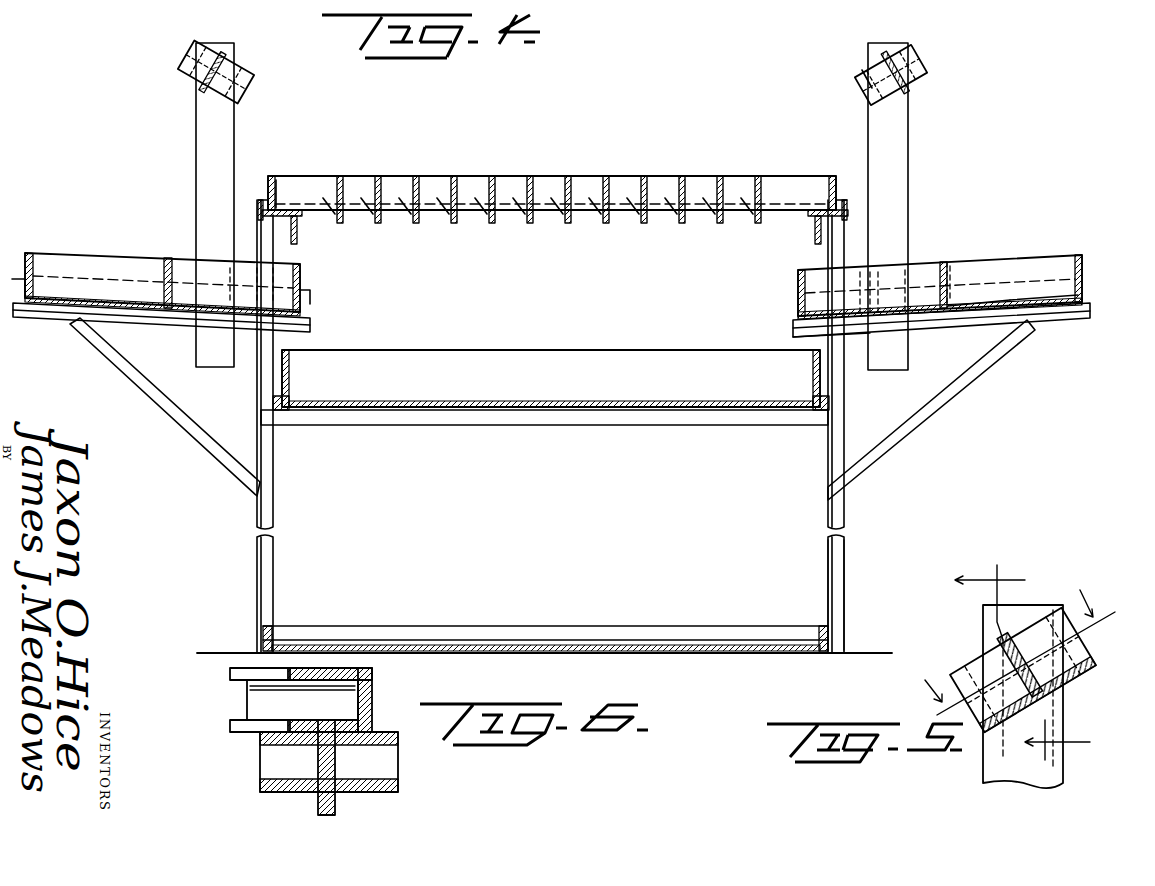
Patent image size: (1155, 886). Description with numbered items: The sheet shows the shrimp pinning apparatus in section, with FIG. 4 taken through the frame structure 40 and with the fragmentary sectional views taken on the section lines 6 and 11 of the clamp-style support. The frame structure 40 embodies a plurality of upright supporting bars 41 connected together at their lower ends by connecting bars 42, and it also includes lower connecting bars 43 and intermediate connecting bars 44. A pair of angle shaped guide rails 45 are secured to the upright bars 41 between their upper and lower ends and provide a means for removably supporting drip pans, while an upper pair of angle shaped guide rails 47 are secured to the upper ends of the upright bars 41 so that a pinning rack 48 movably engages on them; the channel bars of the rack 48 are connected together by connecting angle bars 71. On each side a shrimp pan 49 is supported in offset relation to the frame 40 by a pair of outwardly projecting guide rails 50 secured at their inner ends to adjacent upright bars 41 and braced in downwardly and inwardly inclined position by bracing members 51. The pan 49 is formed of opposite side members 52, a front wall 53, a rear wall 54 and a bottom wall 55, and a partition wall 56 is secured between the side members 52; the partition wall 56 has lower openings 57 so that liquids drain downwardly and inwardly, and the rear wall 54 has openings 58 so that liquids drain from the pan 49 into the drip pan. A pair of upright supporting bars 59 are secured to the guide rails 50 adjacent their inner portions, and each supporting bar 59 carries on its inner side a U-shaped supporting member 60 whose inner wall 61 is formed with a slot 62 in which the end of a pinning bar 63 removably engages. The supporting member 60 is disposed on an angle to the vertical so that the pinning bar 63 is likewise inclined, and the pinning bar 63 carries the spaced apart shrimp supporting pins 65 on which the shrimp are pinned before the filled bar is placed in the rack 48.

In FIG. 4, the frame structure 40 is at (860, 504).
In FIG. 4, the upright supporting bars 41 is at (842, 565).
In FIG. 4, the connecting bars 42 is at (278, 640).
In FIG. 4, the lower connecting bars 43 is at (668, 632).
In FIG. 4, the intermediate connecting bars 44 is at (516, 412).
In FIG. 4, the angle shaped guide rails 45 is at (295, 412).
In FIG. 4, the upper guide rails 47 is at (300, 240).
In FIG. 4, the pinning rack 48 is at (788, 177).
In FIG. 4, the shrimp pan 49 is at (99, 248).
In FIG. 4, the outwardly projecting guide rails 50 is at (60, 322).
In FIG. 4, the bracing members 51 is at (228, 468).
In FIG. 4, the side members 52 is at (922, 285).
In FIG. 4, the front wall 53 is at (1080, 272).
In FIG. 4, the rear wall 54 is at (800, 282).
In FIG. 4, the bottom wall 55 is at (1000, 308).
In FIG. 4, the partition wall 56 is at (950, 268).
In FIG. 4, the lower openings 57 is at (962, 318).
In FIG. 4, the openings 58 is at (800, 316).
In FIG. 4, the upright supporting bars 59 is at (196, 172).
In FIG. 5, the upright supporting bars 59 is at (1025, 770).
In FIG. 4, the U-shaped supporting member 60 is at (186, 95).
In FIG. 6, the U-shaped supporting member 60 is at (372, 702).
In FIG. 5, the U-shaped supporting member 60 is at (964, 653).
In FIG. 6, the inner wall 61 is at (300, 688).
In FIG. 4, the slot 62 is at (858, 78).
In FIG. 6, the slot 62 is at (345, 775).
In FIG. 4, the pinning bar 63 is at (579, 192).
In FIG. 5, the pinning bar 63 is at (1013, 693).
In FIG. 4, the shrimp supporting pins 65 is at (533, 214).
In FIG. 4, the connecting angle bars 71 is at (286, 186).
In FIG. 5, the section line 6- 6 is at (1011, 633).
In FIG. 5, the section line 11- 11 is at (1037, 662).